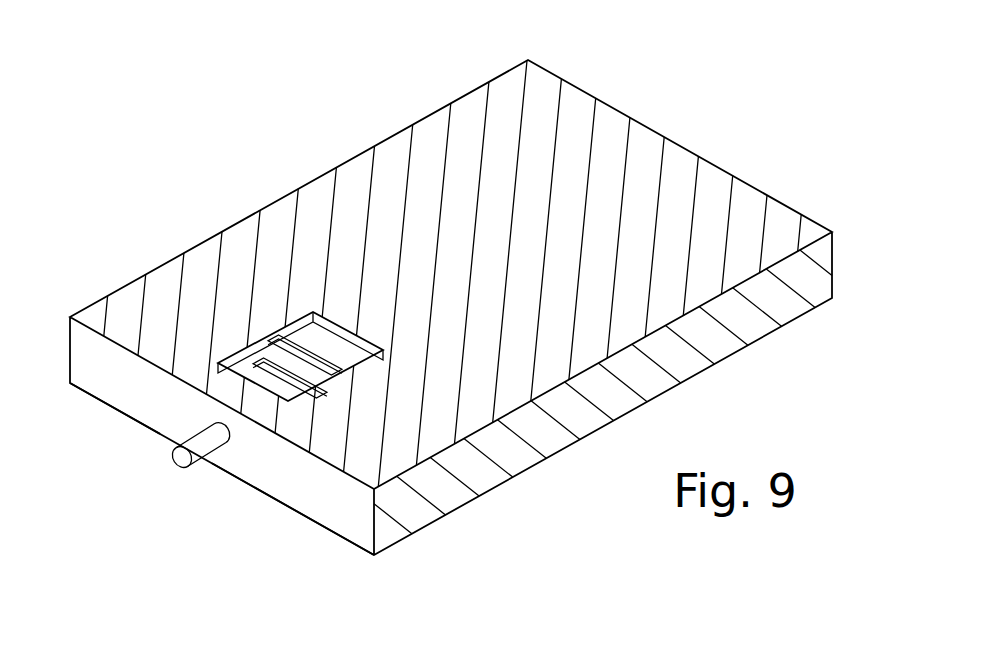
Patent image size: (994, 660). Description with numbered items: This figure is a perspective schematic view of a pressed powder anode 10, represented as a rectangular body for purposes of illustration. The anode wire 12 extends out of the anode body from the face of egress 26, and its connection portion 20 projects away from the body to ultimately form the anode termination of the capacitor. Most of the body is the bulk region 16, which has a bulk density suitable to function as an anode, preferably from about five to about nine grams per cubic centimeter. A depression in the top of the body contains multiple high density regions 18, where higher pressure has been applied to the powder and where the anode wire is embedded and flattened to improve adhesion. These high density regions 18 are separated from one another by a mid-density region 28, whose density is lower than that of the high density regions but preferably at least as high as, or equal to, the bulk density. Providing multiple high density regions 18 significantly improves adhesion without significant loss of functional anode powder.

The pressed powder anode 10 is at (730, 149).
The anode wire 12 is at (202, 478).
The bulk region 16 is at (567, 170).
The high density region 18 is at (305, 338).
The connection portion 20 is at (200, 446).
The face of egress 26 is at (317, 512).
The mid-density region 28 is at (287, 352).